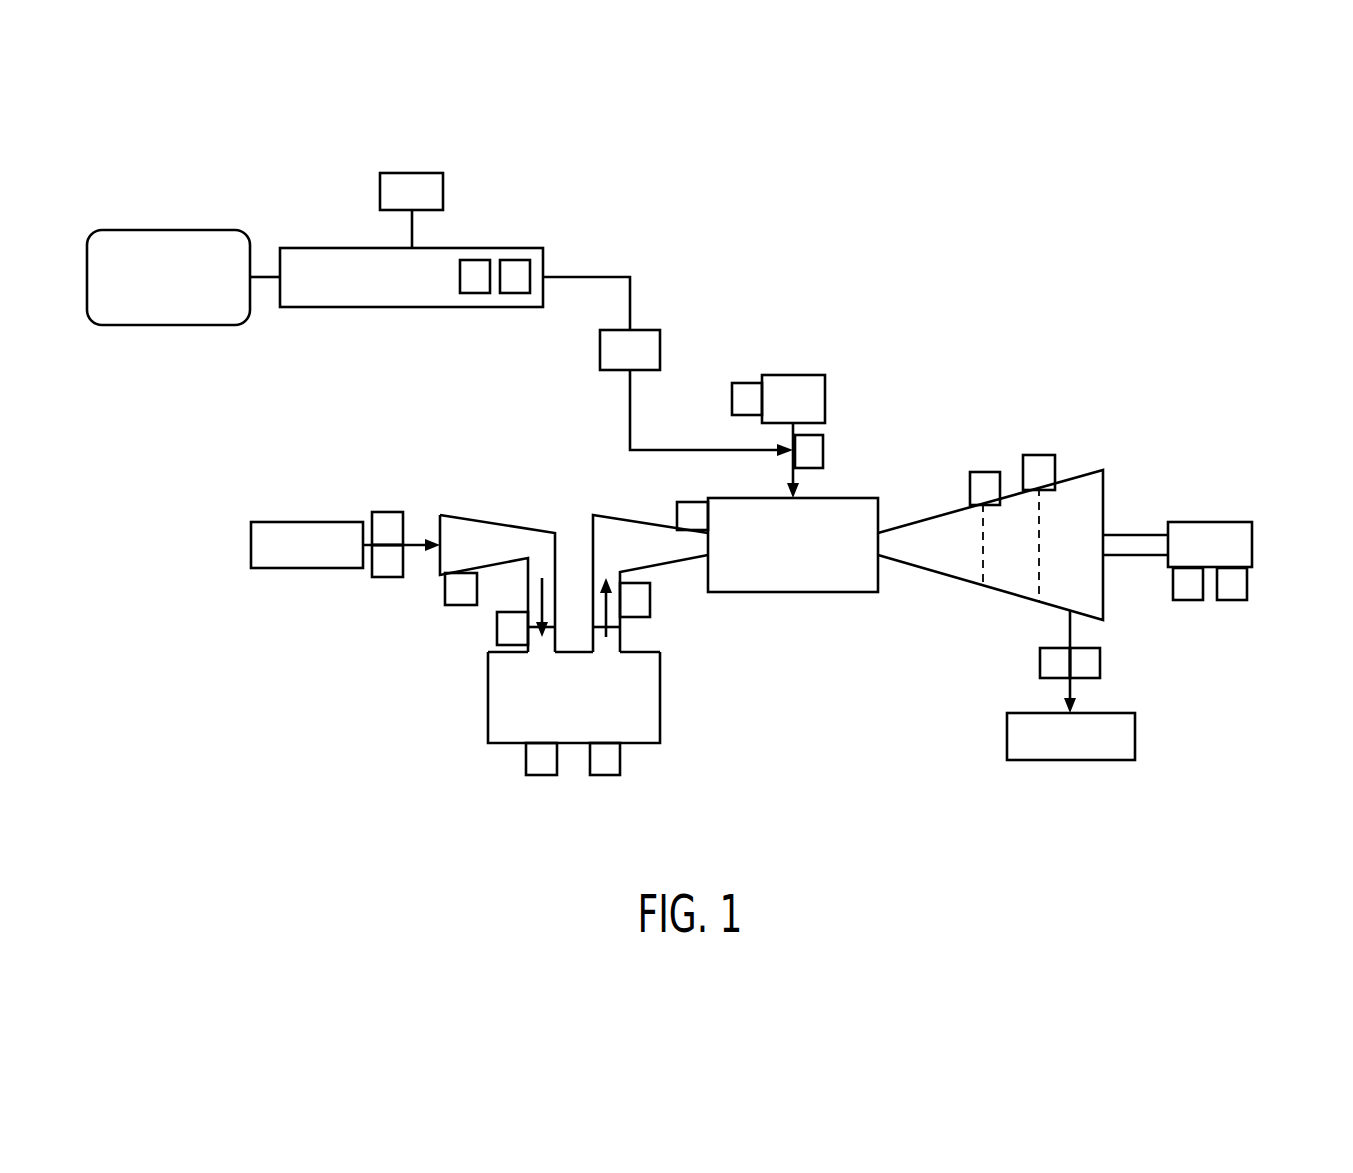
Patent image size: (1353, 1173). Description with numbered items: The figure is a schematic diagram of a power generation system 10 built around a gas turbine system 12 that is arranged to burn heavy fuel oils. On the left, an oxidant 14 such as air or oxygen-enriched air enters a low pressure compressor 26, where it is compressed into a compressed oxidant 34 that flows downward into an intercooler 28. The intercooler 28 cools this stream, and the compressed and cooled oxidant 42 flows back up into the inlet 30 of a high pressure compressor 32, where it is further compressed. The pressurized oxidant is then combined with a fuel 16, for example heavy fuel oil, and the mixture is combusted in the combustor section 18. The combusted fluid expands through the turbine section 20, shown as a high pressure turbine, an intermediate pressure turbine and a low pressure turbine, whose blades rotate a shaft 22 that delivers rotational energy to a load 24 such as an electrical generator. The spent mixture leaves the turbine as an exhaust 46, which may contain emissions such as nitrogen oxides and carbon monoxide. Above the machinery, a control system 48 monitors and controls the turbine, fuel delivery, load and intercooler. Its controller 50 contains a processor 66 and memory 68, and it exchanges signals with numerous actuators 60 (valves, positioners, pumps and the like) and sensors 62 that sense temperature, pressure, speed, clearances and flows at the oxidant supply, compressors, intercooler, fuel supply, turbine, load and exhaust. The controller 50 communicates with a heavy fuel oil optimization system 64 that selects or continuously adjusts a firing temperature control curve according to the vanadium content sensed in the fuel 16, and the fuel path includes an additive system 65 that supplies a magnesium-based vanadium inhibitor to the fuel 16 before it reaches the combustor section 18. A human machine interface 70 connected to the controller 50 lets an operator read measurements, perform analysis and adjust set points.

The power generation system 10 is at (1148, 165).
The gas turbine system 12 is at (891, 305).
The oxidant 14 is at (308, 522).
The fuel 16 is at (797, 375).
The combustor section 18 is at (793, 592).
The turbine section 20 is at (1000, 592).
The shaft 22 is at (1140, 535).
The load 24 is at (1213, 522).
The low pressure compressor 26 is at (497, 524).
The intercooler 28 is at (660, 697).
The inlet 30 is at (605, 558).
The high pressure compressor 32 is at (632, 521).
The compressed oxidant 34 is at (540, 598).
The compressed and cooled oxidant 42 is at (598, 621).
The exhaust 46 is at (1070, 760).
The control system 48 is at (505, 185).
The controller 50 is at (330, 248).
The actuators 60 is at (385, 512).
The sensors 62 is at (460, 605).
The heavy fuel oil optimization system 64 is at (168, 230).
The additive system 65 is at (617, 363).
The processor 66 is at (474, 293).
The memory 68 is at (512, 293).
The human machine interface 70 is at (410, 173).